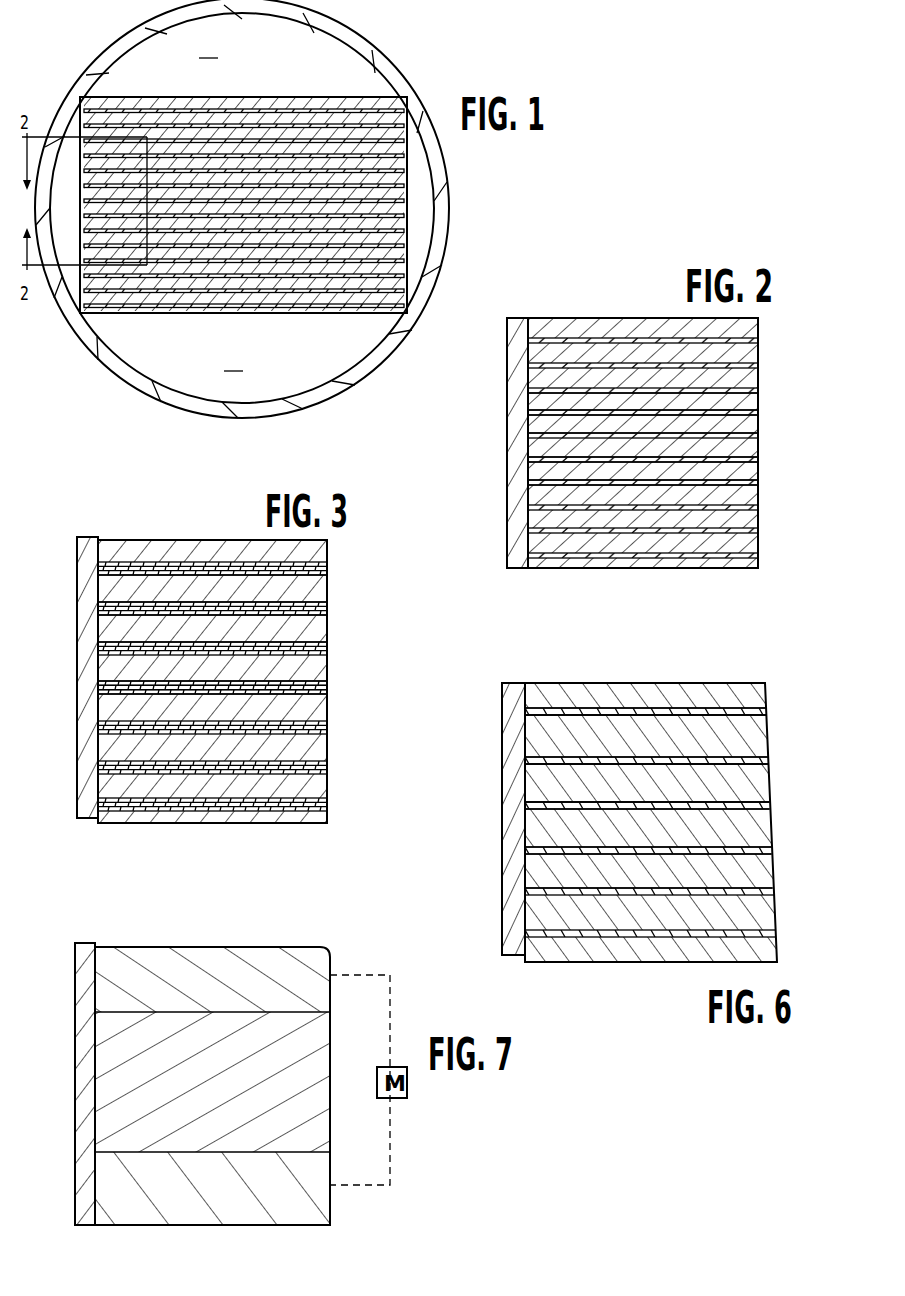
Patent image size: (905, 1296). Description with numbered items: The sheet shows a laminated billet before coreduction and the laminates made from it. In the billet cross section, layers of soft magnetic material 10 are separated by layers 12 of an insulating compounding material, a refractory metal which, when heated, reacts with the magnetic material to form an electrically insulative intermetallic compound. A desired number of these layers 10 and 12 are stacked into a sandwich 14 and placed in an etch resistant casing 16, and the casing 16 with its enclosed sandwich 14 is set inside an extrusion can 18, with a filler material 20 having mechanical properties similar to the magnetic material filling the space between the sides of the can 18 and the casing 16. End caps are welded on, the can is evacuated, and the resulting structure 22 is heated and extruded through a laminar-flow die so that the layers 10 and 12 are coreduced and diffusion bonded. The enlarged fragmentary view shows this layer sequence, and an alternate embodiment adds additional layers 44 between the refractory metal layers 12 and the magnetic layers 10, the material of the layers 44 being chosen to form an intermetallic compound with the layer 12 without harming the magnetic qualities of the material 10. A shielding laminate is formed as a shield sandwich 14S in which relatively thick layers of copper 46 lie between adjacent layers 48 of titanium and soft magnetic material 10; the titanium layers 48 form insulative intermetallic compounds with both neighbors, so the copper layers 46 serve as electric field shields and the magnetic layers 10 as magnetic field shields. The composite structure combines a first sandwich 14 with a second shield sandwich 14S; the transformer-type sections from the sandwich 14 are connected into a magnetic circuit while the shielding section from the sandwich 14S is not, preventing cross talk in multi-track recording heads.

In FIG. 2, the layers of soft magnetic material 10 is at (760, 430).
In FIG. 3, the layers of soft magnetic material 10 is at (324, 633).
In FIG. 6, the layers of soft magnetic material 10 is at (768, 743).
In FIG. 2, the layers of insulating compounding material 12 is at (762, 473).
In FIG. 3, the layers of insulating compounding material 12 is at (325, 688).
In FIG. 1, the sandwich 14 is at (198, 292).
In FIG. 2, the sandwich 14 is at (780, 577).
In FIG. 3, the sandwich 14 is at (212, 681).
In FIG. 7, the sandwich 14 is at (275, 960).
In FIG. 6, the shield sandwich 14S is at (770, 688).
In FIG. 7, the shield sandwich 14S is at (303, 1068).
In FIG. 1, the etch resistant casing 16 is at (337, 100).
In FIG. 2, the etch resistant casing 16 is at (513, 385).
In FIG. 3, the etch resistant casing 16 is at (90, 573).
In FIG. 6, the etch resistant casing 16 is at (512, 700).
In FIG. 7, the etch resistant casing 16 is at (85, 1155).
In FIG. 1, the extrusion can 18 is at (378, 54).
In FIG. 1, the filler material 20 is at (221, 204).
In FIG. 1, the resulting structure 22 is at (241, 209).
In FIG. 3, the additional layers 44 is at (324, 681).
In FIG. 6, the layers of copper 46 is at (565, 695).
In FIG. 6, the layers of titanium 48 is at (766, 716).